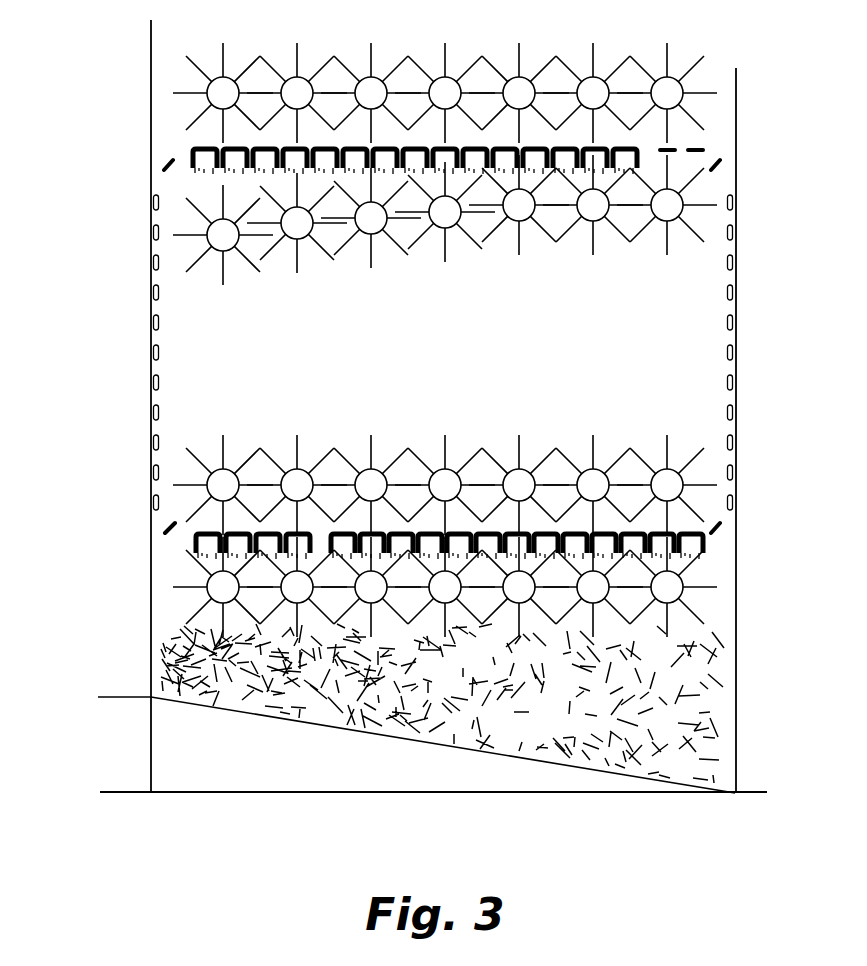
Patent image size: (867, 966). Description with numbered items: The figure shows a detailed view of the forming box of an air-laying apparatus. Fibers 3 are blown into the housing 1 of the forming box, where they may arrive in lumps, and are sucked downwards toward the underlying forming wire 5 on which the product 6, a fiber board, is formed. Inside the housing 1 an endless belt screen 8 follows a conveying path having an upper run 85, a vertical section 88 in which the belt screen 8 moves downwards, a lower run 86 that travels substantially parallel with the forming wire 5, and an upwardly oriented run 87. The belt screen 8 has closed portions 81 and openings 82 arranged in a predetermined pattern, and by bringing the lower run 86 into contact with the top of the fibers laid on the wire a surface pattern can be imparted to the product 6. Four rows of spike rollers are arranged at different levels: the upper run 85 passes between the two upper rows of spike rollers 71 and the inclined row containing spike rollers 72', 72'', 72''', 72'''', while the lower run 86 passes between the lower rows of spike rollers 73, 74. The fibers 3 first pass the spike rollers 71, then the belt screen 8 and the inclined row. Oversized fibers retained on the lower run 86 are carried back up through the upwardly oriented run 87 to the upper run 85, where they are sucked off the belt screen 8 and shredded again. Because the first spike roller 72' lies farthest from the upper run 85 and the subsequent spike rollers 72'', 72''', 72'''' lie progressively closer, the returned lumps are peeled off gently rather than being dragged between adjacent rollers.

The housing 1 is at (150, 429).
The fibers 3 is at (451, 717).
The forming wire 5 is at (755, 796).
The product 6 is at (120, 713).
The endless belt screen 8 is at (165, 351).
The first row of spike rollers 71 is at (697, 82).
The first spike roller 72' is at (223, 256).
The second spike roller 72'' is at (297, 245).
The third spike roller 72''' is at (371, 238).
The fourth spike roller 72'''' is at (447, 233).
The third row of spike rollers 73 is at (323, 434).
The fourth row of spike rollers 74 is at (190, 575).
The closed portions 81 is at (160, 386).
The openings 82 is at (158, 397).
The upper run 85 is at (187, 145).
The lower run 86 is at (192, 543).
The upwardly oriented run 87 is at (145, 362).
The vertical section 88 is at (729, 323).